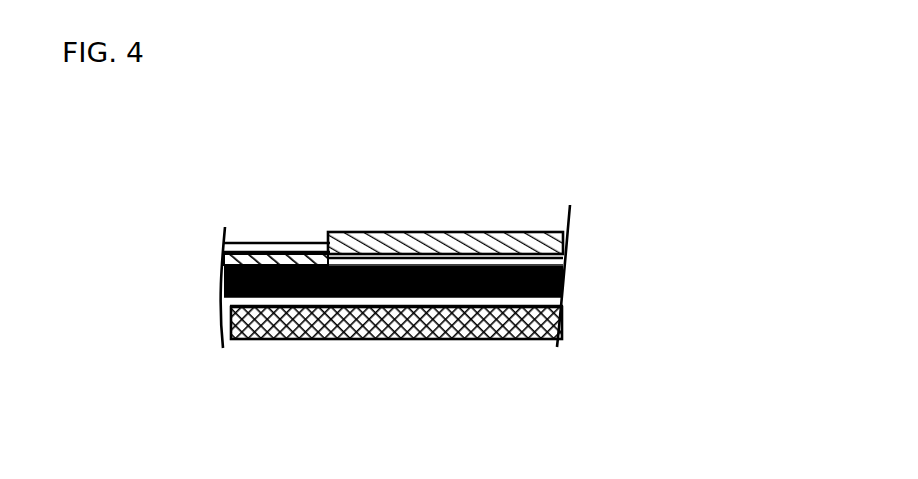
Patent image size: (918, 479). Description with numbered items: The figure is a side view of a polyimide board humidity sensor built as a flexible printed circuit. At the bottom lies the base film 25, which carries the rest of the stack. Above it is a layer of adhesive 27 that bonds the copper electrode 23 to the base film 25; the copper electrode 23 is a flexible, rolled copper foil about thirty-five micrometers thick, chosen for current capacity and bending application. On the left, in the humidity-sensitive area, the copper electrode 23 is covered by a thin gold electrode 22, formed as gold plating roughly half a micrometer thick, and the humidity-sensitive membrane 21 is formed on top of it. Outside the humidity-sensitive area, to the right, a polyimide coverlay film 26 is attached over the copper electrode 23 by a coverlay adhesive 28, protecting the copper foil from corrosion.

The humidity-sensitive membrane 21 is at (268, 247).
The gold electrode 22 is at (224, 257).
The copper electrode 23 is at (568, 272).
The base film 25 is at (240, 343).
The coverlay film 26 is at (462, 233).
The adhesive 27 is at (233, 302).
The coverlay adhesive 28 is at (563, 257).